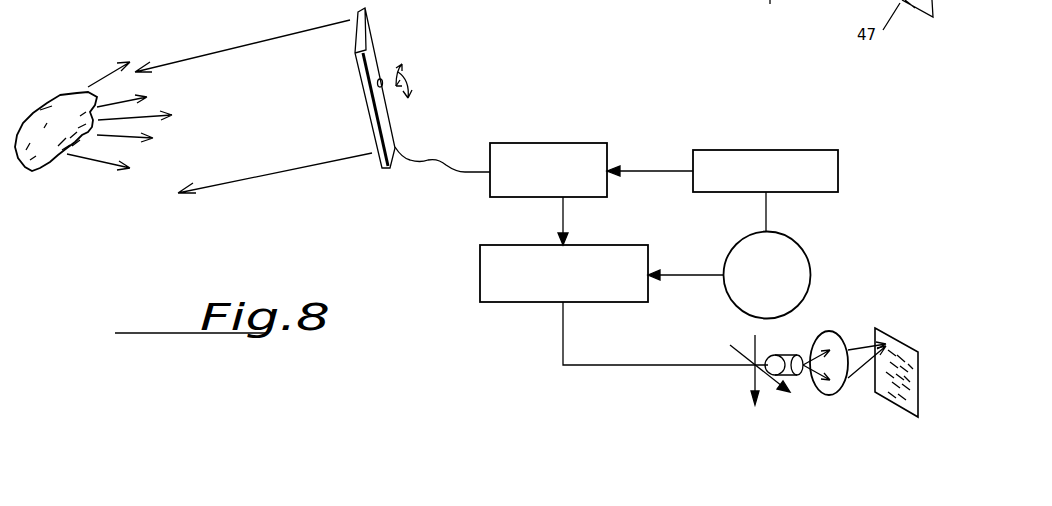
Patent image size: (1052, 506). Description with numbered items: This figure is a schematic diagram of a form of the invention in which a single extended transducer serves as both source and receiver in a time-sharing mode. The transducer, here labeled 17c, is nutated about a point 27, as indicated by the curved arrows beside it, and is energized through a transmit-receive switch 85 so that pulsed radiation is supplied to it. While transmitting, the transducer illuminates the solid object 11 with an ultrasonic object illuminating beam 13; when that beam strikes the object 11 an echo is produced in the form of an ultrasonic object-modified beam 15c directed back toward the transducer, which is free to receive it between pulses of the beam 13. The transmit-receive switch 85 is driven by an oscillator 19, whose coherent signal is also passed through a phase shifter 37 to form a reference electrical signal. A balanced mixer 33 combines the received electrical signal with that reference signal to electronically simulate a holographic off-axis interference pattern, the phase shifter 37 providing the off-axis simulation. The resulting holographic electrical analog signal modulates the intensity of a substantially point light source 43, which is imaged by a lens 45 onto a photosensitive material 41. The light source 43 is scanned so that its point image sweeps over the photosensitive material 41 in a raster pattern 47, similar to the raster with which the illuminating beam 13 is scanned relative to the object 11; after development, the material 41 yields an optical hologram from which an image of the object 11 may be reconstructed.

The object 11 is at (60, 105).
The object illuminating beam 13 is at (222, 62).
The object-modified beam 15c is at (98, 76).
The scanning plate / antenna 17c is at (372, 38).
The point 27 is at (395, 72).
The transmit-receive switch 85 is at (530, 147).
The oscillator 19 is at (776, 158).
The phase shifter 37 is at (788, 255).
The balanced mixer 33 is at (495, 270).
The point light source 43 is at (789, 355).
The lens 45 is at (832, 338).
The photosensitive material 41 is at (900, 340).
The raster pattern 47 is at (893, 388).